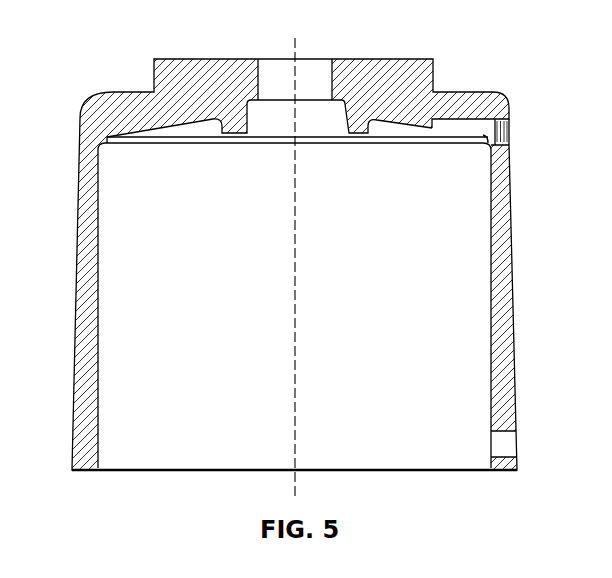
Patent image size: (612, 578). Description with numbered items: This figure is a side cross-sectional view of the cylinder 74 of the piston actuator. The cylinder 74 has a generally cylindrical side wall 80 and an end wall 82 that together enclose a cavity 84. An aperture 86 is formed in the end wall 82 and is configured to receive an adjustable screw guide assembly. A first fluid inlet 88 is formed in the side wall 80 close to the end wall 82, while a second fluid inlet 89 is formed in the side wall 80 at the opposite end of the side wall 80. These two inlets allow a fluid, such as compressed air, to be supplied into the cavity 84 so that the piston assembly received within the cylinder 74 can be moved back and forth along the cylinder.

The cylinder 74 is at (129, 56).
The side wall 80 is at (87, 302).
The end wall 82 is at (412, 72).
The cavity 84 is at (233, 338).
The aperture 86 is at (275, 65).
The first fluid inlet 88 is at (498, 133).
The second fluid inlet 89 is at (505, 440).